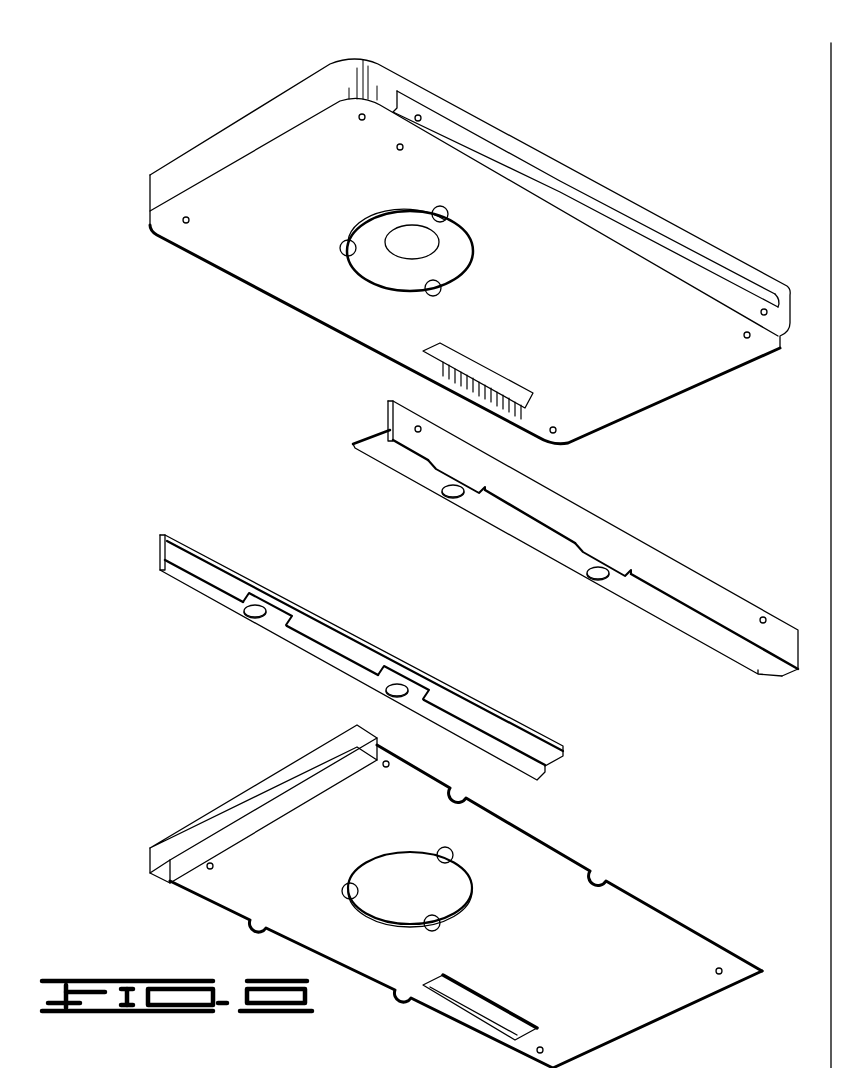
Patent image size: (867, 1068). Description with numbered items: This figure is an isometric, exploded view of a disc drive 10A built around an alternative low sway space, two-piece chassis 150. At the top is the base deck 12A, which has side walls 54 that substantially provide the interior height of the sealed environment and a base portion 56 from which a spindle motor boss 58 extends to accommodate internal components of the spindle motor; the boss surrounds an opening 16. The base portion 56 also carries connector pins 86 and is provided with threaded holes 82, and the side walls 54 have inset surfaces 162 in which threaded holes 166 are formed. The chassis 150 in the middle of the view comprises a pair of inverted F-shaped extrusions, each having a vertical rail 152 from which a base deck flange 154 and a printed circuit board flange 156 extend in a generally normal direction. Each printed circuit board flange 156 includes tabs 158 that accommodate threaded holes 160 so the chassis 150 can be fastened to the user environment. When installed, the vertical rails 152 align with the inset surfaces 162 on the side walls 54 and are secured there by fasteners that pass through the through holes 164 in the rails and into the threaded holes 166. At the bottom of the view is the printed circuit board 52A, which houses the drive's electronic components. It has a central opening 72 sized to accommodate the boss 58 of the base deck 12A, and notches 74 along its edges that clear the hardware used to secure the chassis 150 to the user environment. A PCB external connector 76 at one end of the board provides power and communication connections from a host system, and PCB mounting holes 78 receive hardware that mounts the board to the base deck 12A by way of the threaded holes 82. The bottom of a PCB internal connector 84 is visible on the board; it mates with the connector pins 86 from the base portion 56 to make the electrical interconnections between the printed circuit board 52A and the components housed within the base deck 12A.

The disc drive 10A is at (200, 80).
The base deck 12A is at (185, 160).
The side walls 54 is at (310, 97).
The base portion 56 is at (442, 152).
The spindle motor boss 58 is at (373, 273).
The spindle opening 16 is at (430, 259).
The threaded holes 82 is at (360, 124).
The connector pins 86 is at (495, 357).
The inset surfaces 162 is at (572, 207).
The threaded holes 166 is at (432, 112).
The two-piece chassis 150 is at (312, 418).
The vertical rail 152 is at (568, 515).
The base deck flange 154 is at (372, 452).
The printed circuit board flange 156 is at (778, 666).
The tabs 158 is at (442, 492).
The threaded holes 160 is at (468, 490).
The through holes 164 is at (418, 427).
The printed circuit board 52A is at (255, 865).
The central opening 72 is at (436, 895).
The notches 74 is at (461, 789).
The PCB external connector 76 is at (270, 778).
The PCB mounting holes 78 is at (388, 770).
The PCB internal connector 84 is at (472, 1001).